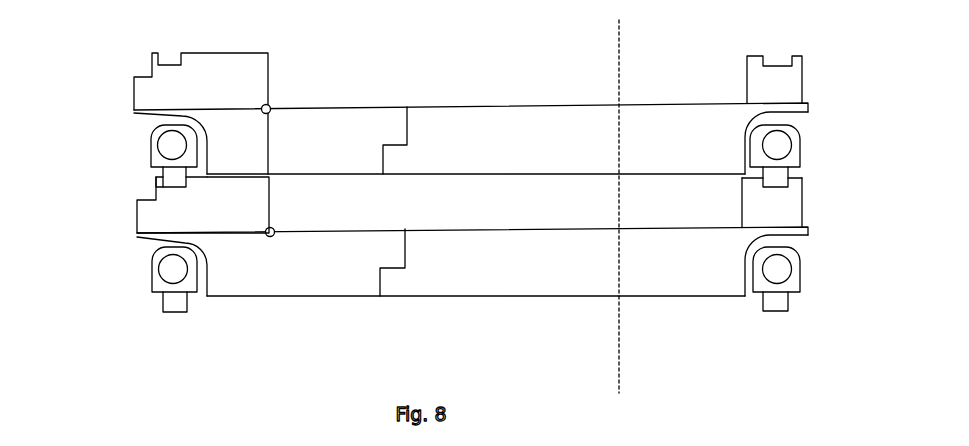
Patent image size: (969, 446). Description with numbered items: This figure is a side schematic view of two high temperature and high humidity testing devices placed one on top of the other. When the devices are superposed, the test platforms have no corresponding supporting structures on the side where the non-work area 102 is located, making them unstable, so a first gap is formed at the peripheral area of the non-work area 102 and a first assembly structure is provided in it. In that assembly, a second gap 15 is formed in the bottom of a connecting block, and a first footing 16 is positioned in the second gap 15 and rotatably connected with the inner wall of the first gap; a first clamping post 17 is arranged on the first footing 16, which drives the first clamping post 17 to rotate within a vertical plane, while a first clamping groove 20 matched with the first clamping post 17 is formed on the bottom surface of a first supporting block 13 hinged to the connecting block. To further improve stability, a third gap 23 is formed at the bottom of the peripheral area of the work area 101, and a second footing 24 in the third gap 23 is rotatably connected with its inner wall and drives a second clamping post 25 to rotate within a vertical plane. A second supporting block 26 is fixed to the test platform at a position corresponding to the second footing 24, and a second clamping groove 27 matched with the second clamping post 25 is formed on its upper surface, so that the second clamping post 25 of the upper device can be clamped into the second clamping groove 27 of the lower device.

The work area 101 is at (684, 33).
The non-work area 102 is at (455, 31).
The first supporting block 13 is at (163, 208).
The second gap 15 is at (149, 124).
The first footing 16 is at (147, 157).
The first clamping post 17 is at (163, 172).
The first clamping groove 20 is at (158, 188).
The third gap 23 is at (793, 123).
The second footing 24 is at (793, 157).
The second clamping post 25 is at (778, 172).
The second supporting block 26 is at (780, 203).
The second clamping groove 27 is at (797, 180).